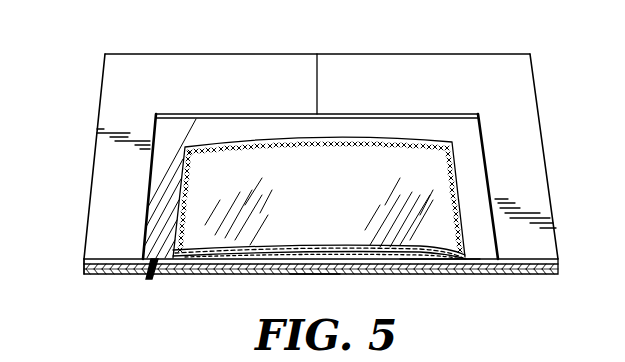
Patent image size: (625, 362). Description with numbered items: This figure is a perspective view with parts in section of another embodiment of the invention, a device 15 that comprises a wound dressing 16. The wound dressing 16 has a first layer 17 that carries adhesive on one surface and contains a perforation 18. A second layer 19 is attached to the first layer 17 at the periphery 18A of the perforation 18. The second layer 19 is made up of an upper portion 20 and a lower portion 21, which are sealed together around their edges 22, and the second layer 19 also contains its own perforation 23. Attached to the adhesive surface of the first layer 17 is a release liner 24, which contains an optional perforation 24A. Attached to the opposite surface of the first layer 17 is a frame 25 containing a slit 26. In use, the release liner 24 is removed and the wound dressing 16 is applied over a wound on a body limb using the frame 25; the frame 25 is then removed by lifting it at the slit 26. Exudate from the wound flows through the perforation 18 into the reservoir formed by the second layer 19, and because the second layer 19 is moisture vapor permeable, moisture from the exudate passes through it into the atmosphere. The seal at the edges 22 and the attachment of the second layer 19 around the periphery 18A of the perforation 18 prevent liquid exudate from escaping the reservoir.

The device 15 is at (114, 42).
The wound dressing 16 is at (155, 262).
The first layer 17 is at (82, 264).
The perforation 18 is at (317, 276).
The periphery 18A is at (300, 260).
The second layer 19 is at (459, 203).
The upper portion 20 is at (403, 167).
The lower portion 21 is at (435, 259).
The edges 22 is at (456, 152).
The perforation 23 is at (330, 259).
The release liner 24 is at (93, 276).
The optional perforation 24A is at (325, 268).
The frame 25 is at (107, 108).
The slit 26 is at (317, 71).